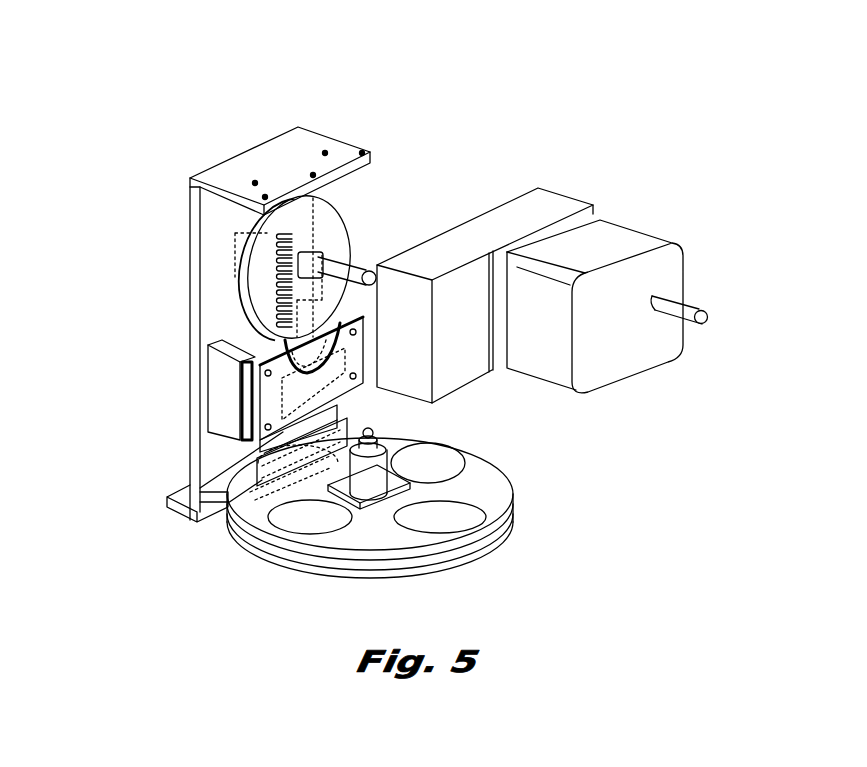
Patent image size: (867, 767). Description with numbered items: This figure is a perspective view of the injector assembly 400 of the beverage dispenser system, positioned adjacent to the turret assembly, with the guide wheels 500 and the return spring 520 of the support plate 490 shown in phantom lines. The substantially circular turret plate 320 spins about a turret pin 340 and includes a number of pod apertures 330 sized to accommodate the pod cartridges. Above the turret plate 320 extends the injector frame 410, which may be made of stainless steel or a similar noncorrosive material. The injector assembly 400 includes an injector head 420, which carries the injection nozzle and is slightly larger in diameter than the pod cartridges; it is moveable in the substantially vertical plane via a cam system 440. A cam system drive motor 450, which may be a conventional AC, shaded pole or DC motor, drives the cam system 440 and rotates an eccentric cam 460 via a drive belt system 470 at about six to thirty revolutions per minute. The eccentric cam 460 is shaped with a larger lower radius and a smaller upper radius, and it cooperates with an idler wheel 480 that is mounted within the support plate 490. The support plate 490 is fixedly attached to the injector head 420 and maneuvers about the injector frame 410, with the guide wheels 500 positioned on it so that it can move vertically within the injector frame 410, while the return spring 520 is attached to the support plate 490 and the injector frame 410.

The injector assembly 400 is at (193, 114).
The injector frame 410 is at (181, 343).
The injector head 420 is at (274, 488).
The cam system 440 is at (349, 206).
The cam system drive motor 450 is at (622, 225).
The eccentric cam 460 is at (232, 287).
The drive belt system 470 is at (695, 311).
The idler wheel 480 is at (372, 270).
The support plate 490 is at (246, 408).
The guide wheels 500 is at (243, 380).
The return spring 520 is at (270, 226).
The turret plate 320 is at (506, 474).
The pod apertures 330 is at (437, 461).
The turret pin 340 is at (369, 438).